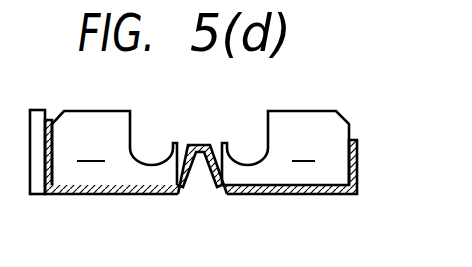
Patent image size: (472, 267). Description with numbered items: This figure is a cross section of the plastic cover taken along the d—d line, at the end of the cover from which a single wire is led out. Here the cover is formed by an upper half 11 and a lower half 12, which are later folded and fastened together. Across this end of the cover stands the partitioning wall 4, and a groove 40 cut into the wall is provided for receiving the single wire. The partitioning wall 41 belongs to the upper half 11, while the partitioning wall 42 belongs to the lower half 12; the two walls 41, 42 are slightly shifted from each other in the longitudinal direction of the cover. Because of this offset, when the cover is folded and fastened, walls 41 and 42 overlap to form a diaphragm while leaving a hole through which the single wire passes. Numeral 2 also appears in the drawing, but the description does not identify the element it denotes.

The ridge / projection of base 2 is at (201, 142).
The partitioning wall 4 is at (200, 126).
The upper half 11 is at (297, 194).
The lower half 12 is at (103, 194).
The groove 40 is at (152, 163).
The partitioning wall 41 is at (300, 94).
The partitioning wall 42 is at (114, 148).